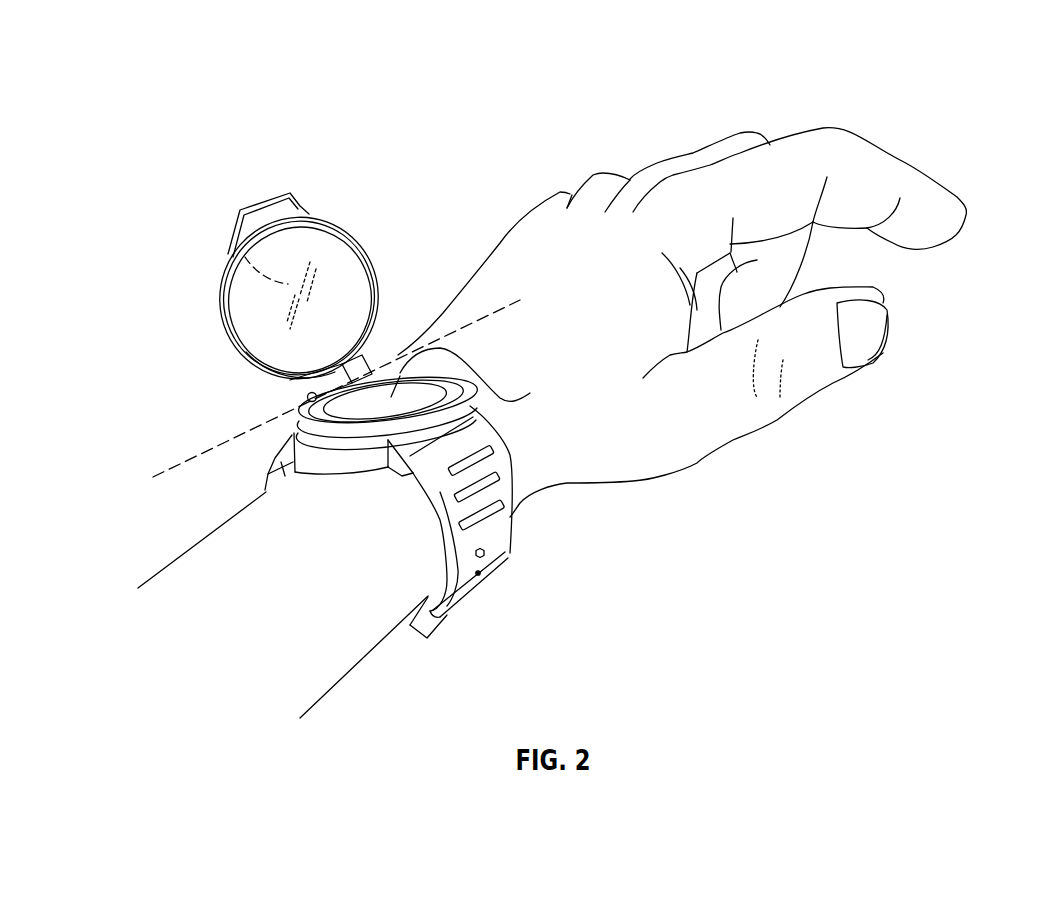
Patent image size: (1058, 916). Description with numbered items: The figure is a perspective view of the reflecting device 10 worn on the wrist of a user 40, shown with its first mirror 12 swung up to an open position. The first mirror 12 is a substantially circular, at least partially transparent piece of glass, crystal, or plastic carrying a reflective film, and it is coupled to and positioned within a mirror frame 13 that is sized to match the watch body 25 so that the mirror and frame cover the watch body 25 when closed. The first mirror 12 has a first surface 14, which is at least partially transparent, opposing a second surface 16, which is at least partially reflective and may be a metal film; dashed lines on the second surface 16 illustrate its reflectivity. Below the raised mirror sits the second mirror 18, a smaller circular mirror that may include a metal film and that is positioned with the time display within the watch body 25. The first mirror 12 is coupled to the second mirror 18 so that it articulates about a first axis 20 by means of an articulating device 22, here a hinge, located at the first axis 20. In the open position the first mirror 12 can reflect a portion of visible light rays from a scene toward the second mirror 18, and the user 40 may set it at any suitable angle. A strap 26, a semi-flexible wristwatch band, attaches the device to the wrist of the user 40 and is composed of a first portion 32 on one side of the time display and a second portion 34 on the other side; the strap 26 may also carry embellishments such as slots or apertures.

The reflecting device 10 is at (342, 150).
The first mirror 12 is at (196, 283).
The mirror frame 13 is at (247, 350).
The first surface 14 is at (232, 255).
The second surface 16 is at (350, 317).
The second mirror 18 is at (530, 393).
The first axis 20 is at (226, 438).
The articulating device 22 is at (395, 347).
The watch body 25 is at (347, 458).
The strap 26 is at (510, 598).
The first portion 32 is at (487, 542).
The second portion 34 is at (270, 468).
The user 40 is at (306, 603).